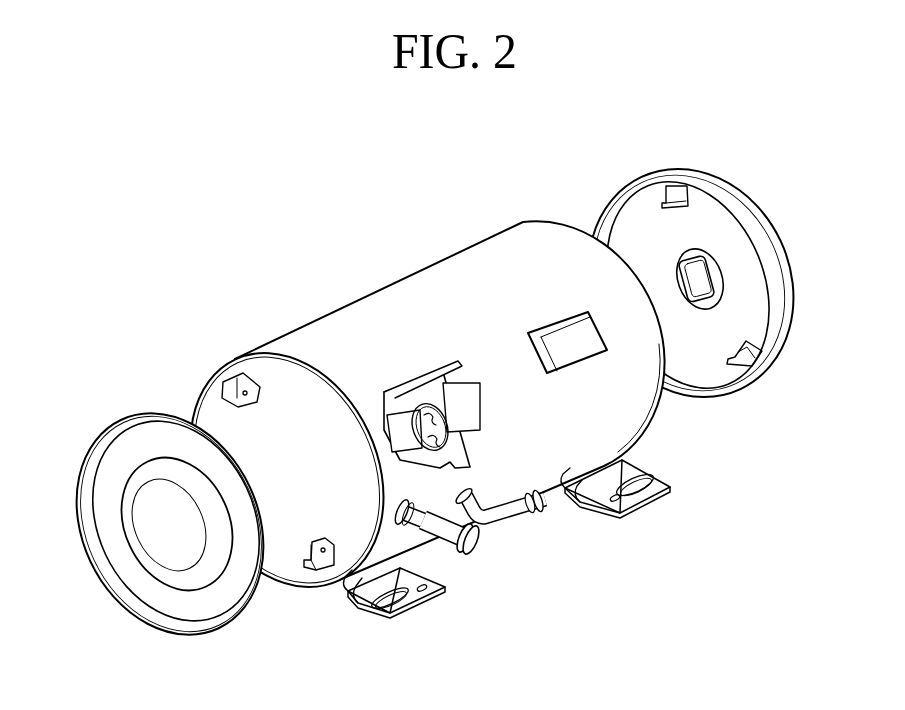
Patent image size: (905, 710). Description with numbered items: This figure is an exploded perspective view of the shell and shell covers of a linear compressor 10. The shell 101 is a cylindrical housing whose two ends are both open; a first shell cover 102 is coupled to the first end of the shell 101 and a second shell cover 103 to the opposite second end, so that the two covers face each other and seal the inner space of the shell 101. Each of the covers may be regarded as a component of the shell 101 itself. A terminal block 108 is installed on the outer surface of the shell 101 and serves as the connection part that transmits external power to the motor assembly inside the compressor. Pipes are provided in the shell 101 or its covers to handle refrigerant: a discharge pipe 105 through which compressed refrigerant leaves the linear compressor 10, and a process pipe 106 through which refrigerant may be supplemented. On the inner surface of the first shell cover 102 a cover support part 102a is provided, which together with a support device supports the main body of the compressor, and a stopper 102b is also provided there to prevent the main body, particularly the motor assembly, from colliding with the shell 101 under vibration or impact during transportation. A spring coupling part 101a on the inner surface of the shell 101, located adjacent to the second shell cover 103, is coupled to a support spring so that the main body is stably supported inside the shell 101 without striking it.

The linear compressor 10 is at (268, 292).
The shell 101 is at (335, 320).
The spring coupling part 101a is at (303, 568).
The first shell cover 102 is at (753, 213).
The cover support part 102a is at (710, 285).
The stopper 102b is at (675, 188).
The second shell cover 103 is at (92, 481).
The discharge pipe 105 is at (507, 520).
The process pipe 106 is at (445, 535).
The terminal block 108 is at (401, 380).